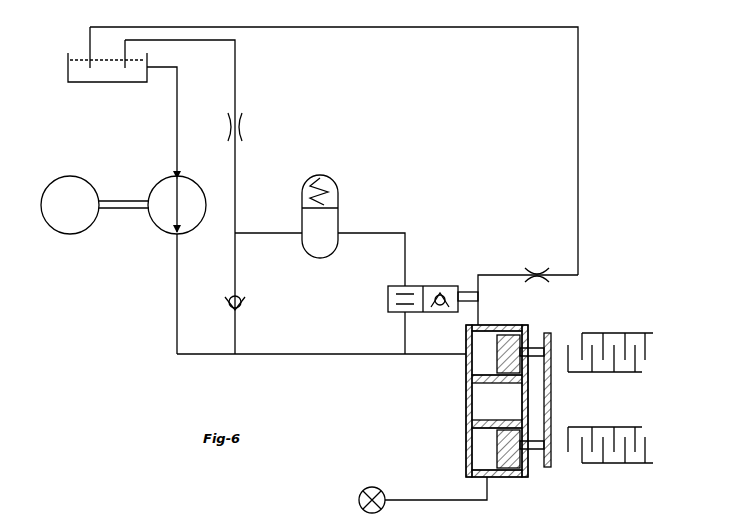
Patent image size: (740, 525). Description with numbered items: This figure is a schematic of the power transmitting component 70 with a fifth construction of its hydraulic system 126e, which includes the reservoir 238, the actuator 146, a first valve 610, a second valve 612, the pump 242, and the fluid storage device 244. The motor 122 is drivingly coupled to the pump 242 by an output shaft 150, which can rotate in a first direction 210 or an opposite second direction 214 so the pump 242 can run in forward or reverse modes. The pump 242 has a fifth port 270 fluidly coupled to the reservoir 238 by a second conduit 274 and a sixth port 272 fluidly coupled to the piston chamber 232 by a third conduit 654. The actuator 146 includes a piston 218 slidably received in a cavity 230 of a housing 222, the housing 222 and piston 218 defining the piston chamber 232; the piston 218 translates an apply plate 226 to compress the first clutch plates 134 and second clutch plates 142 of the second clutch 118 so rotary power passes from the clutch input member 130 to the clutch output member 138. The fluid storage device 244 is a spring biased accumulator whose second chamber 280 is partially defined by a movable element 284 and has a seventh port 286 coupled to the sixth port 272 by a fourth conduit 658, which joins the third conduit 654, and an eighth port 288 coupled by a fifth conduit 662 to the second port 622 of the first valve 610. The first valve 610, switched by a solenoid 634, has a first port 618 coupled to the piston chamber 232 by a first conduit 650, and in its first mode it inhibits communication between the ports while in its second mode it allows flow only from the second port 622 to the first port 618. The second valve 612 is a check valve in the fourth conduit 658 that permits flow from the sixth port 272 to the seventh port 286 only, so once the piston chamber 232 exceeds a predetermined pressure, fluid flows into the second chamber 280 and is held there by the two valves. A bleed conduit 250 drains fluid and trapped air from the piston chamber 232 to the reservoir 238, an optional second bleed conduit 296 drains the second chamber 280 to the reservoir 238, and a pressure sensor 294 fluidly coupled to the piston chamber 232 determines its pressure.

The power transmitting component 70 is at (630, 112).
The second clutch 118 is at (618, 330).
The motor 122 is at (50, 232).
The hydraulic system 126e is at (165, 360).
The clutch input member 130 is at (643, 333).
The first clutch plates 134 is at (636, 350).
The clutch output member 138 is at (625, 373).
The second clutch plates 142 is at (616, 360).
The actuator 146 is at (462, 446).
The output shaft 150 is at (126, 211).
The first direction 210 is at (113, 228).
The second direction 214 is at (135, 186).
The piston 218 is at (497, 455).
The housing 222 is at (466, 428).
The apply plate 226 is at (551, 340).
The cavity 230 is at (508, 335).
The piston chamber 232 is at (492, 367).
The reservoir 238 is at (68, 64).
The pump 242 is at (158, 228).
The fluid storage device 244 is at (310, 176).
The bleed conduit 250 is at (578, 118).
The fifth port 270 is at (177, 178).
The sixth port 272 is at (179, 235).
The second conduit 274 is at (177, 90).
The second chamber 280 is at (305, 208).
The movable element 284 is at (335, 195).
The seventh port 286 is at (310, 222).
The eighth port 288 is at (345, 228).
The pressure sensor 294 is at (360, 492).
The second bleed conduit 296 is at (235, 97).
The first valve 610 is at (388, 300).
The second valve 612 is at (243, 304).
The first port 618 is at (405, 320).
The second port 622 is at (405, 286).
The solenoid 634 is at (466, 292).
The first conduit 650 is at (405, 330).
The third conduit 654 is at (177, 328).
The fourth conduit 658 is at (270, 233).
The fifth conduit 662 is at (405, 248).